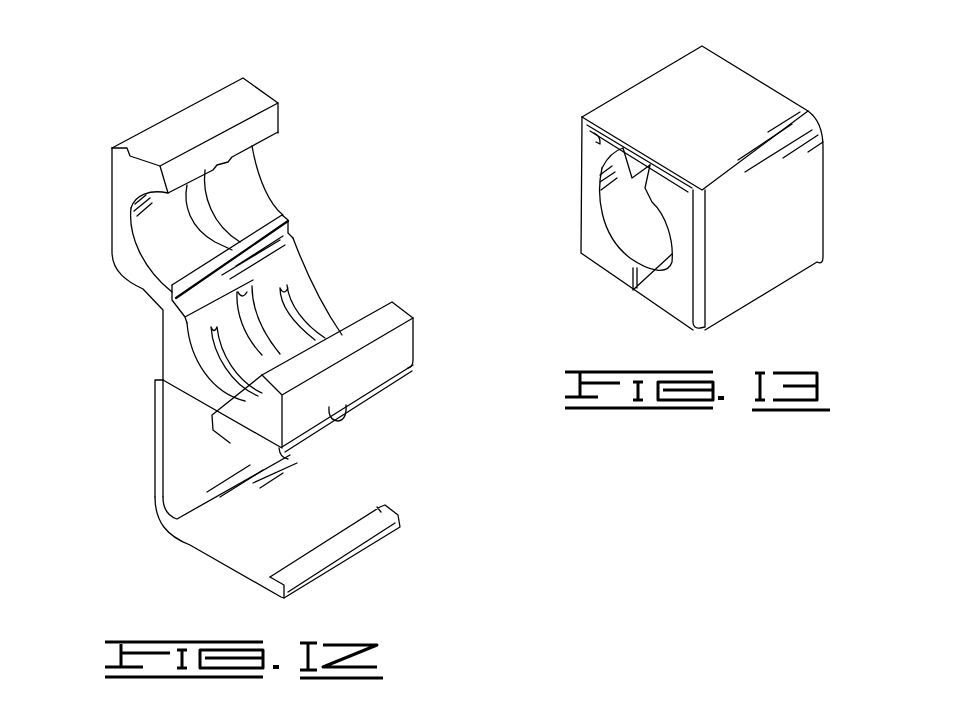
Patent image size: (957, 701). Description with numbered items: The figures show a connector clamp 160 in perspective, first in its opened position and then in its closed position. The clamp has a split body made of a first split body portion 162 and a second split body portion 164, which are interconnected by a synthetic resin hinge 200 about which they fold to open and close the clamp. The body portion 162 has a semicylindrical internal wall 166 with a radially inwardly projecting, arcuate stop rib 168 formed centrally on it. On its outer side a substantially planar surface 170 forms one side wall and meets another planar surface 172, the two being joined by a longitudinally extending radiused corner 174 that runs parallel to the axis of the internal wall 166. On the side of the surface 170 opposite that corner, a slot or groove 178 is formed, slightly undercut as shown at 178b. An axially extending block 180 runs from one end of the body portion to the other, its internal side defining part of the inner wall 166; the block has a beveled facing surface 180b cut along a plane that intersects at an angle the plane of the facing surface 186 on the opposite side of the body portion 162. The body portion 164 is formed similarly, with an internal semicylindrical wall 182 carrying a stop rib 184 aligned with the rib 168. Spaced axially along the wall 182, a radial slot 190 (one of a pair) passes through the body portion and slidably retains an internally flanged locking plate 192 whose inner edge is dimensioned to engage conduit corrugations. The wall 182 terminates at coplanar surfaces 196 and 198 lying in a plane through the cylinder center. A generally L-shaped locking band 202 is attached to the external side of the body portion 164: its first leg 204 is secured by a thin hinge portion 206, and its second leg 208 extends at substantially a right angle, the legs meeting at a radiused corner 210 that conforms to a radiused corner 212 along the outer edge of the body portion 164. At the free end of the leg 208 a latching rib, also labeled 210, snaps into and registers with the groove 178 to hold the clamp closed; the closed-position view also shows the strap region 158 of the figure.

In FIG. 12, the saddle strap 158 is at (228, 370).
In FIG. 12, the connector clamp 160 is at (383, 550).
In FIG. 13, the connector clamp 160 is at (755, 312).
In FIG. 12, the first split body portion 162 is at (131, 275).
In FIG. 13, the first split body portion 162 is at (578, 229).
In FIG. 12, the second split body portion 164 is at (405, 344).
In FIG. 13, the second split body portion 164 is at (670, 322).
In FIG. 12, the semicylindrical internal wall 166 is at (178, 247).
In FIG. 13, the semicylindrical internal wall 166 is at (645, 220).
In FIG. 12, the stop rib 168 is at (220, 160).
In FIG. 12, the planar surface 170 is at (153, 122).
In FIG. 12, the planar surface 172 is at (163, 300).
In FIG. 12, the radiused corner 174 is at (143, 300).
In FIG. 13, the radiused corner 174 is at (581, 254).
In FIG. 12, the slot or groove 178 is at (216, 83).
In FIG. 13, the undercut 178b is at (598, 140).
In FIG. 12, the block 180 is at (140, 175).
In FIG. 12, the facing surface 180b is at (195, 166).
In FIG. 13, the facing surface 180b is at (633, 163).
In FIG. 12, the internal semicylindrical wall 182 is at (330, 317).
In FIG. 12, the stop rib 184 is at (249, 305).
In FIG. 12, the facing surface 186 is at (283, 213).
In FIG. 12, the radial slot 190 is at (303, 318).
In FIG. 12, the locking plate 192 is at (340, 420).
In FIG. 12, the coplanar surface 196 is at (290, 246).
In FIG. 12, the coplanar surface 198 is at (403, 304).
In FIG. 12, the hinge 200 is at (164, 306).
In FIG. 12, the locking band 202 is at (170, 540).
In FIG. 12, the first leg 204 is at (157, 428).
In FIG. 13, the first leg 204 is at (780, 250).
In FIG. 12, the thin hinge portion 206 is at (164, 383).
In FIG. 12, the second leg 208 is at (291, 537).
In FIG. 13, the second leg 208 is at (712, 100).
In FIG. 12, the radiused corner 210 is at (158, 515).
In FIG. 13, the radiused corner 210 is at (590, 126).
In FIG. 12, the radiused corner 212 is at (362, 382).
In FIG. 13, the radiused corner 212 is at (694, 202).